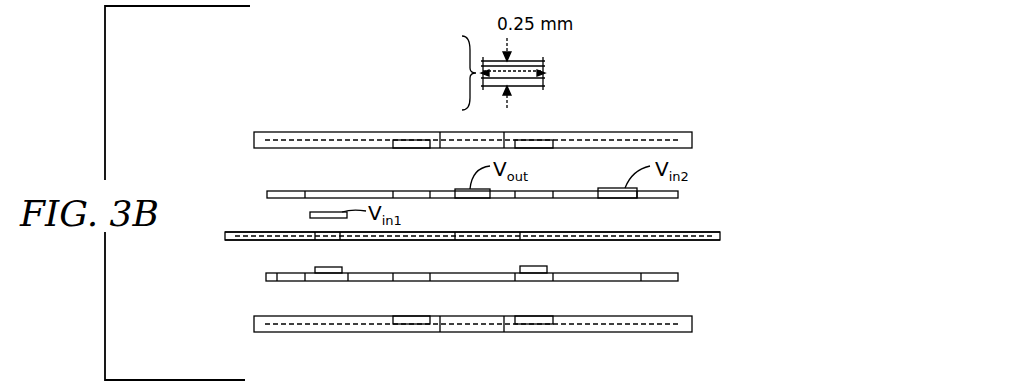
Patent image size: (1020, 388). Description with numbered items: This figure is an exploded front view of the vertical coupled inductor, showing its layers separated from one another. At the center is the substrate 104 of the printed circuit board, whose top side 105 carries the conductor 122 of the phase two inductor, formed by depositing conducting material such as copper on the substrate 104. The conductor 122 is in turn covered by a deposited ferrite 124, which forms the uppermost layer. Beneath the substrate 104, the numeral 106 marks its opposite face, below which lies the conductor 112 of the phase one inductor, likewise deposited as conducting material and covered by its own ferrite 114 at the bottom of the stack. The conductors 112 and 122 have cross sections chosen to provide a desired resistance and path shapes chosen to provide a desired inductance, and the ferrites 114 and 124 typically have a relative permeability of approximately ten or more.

The substrate 104 is at (708, 240).
The top side 105 is at (252, 232).
The bottom surface of layer 104 106 is at (245, 241).
The conductor 112 is at (275, 281).
The ferrite 114 is at (262, 332).
The conductor 122 is at (562, 191).
The ferrite 124 is at (594, 135).